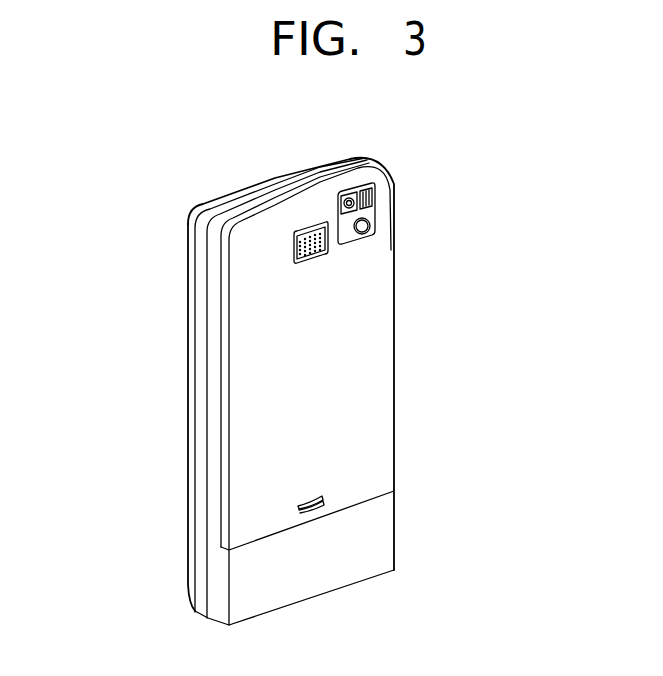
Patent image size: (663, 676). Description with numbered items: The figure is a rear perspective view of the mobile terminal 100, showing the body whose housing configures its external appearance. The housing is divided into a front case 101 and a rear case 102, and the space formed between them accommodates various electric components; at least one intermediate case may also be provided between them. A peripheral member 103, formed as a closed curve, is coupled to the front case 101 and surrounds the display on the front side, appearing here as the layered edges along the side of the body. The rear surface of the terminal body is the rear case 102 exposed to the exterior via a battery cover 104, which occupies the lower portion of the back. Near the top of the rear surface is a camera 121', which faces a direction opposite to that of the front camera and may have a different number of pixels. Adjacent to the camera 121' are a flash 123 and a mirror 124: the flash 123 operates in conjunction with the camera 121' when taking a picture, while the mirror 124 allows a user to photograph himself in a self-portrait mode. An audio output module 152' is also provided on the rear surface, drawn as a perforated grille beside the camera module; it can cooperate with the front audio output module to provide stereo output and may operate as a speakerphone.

The mobile terminal 100 is at (168, 288).
The front case 101 is at (203, 450).
The rear case 102 is at (215, 519).
The peripheral member 103 is at (190, 385).
The battery cover 104 is at (362, 387).
The camera 121' is at (405, 216).
The flash 123 is at (369, 188).
The mirror 124 is at (349, 194).
The audio output module 152' is at (292, 188).